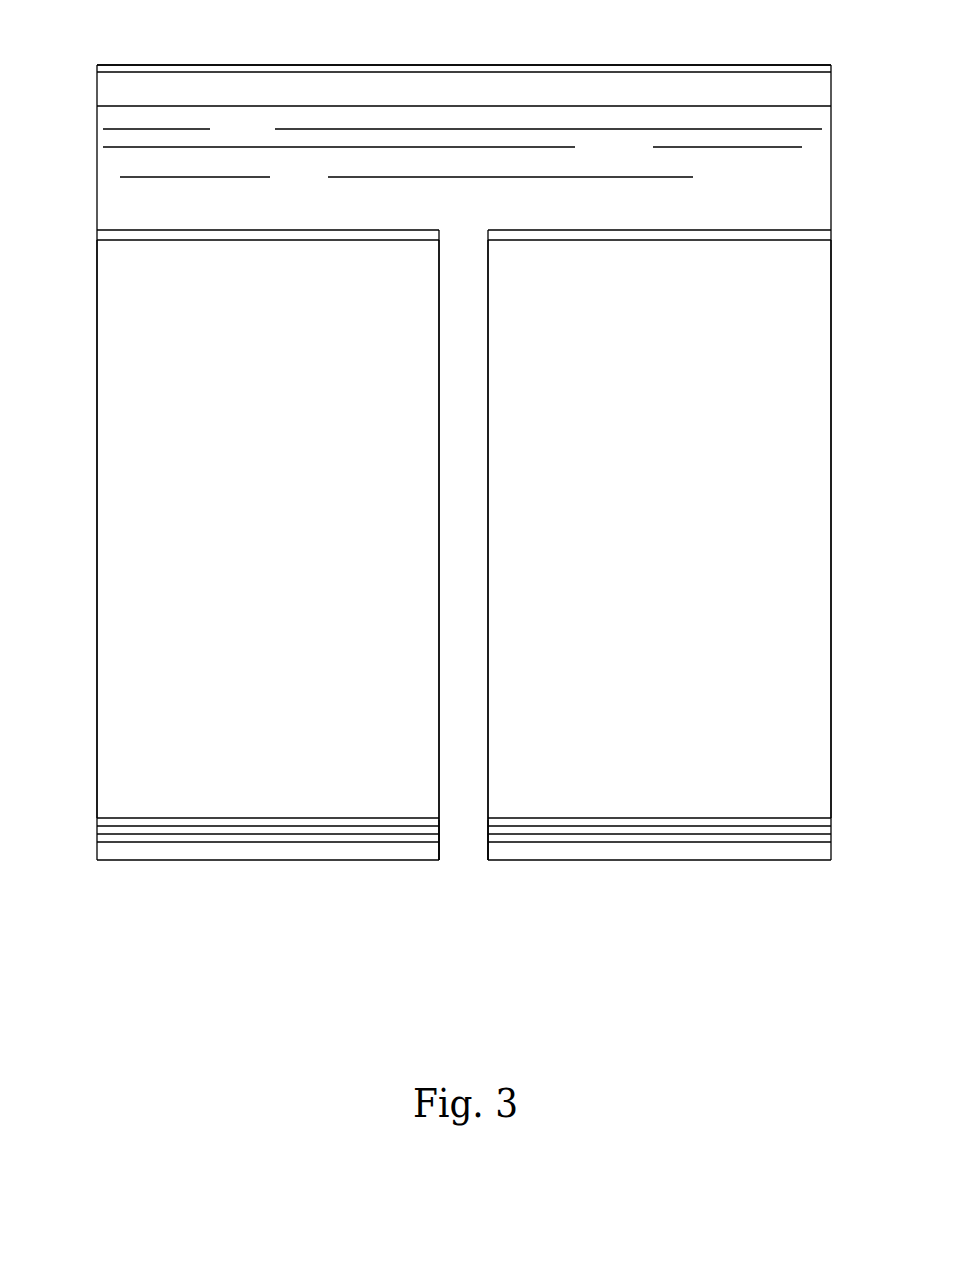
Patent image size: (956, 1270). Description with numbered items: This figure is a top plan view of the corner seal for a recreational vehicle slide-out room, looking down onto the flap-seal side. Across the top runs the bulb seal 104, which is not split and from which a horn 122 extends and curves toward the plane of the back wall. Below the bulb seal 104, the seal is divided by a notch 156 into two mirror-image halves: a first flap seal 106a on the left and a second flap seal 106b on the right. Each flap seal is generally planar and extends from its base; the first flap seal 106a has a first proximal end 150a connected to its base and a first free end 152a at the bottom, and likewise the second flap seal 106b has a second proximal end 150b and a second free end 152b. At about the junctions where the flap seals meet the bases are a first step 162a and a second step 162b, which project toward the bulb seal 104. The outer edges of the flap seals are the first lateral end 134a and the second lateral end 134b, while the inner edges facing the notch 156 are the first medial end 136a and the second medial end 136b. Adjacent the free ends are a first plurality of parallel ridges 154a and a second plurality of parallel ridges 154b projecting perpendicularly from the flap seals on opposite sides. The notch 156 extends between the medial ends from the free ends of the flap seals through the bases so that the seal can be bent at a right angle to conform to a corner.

The horn 122 is at (800, 65).
The bulb seal 104 is at (821, 153).
The first step 162a is at (105, 235).
The second step 162b is at (832, 235).
The first proximal end 150a is at (90, 252).
The second proximal end 150b is at (845, 256).
The first lateral end 134a is at (88, 778).
The second lateral end 134b is at (842, 789).
The first ridge 154a is at (110, 822).
The second ridge 154b is at (830, 822).
The first flap seal 106a is at (292, 862).
The second flap seal 106b is at (745, 862).
The first free end 152a is at (146, 893).
The second free end 152b is at (720, 897).
The first medial end 136a is at (446, 850).
The second medial end 136b is at (482, 850).
The notch 156 is at (464, 858).